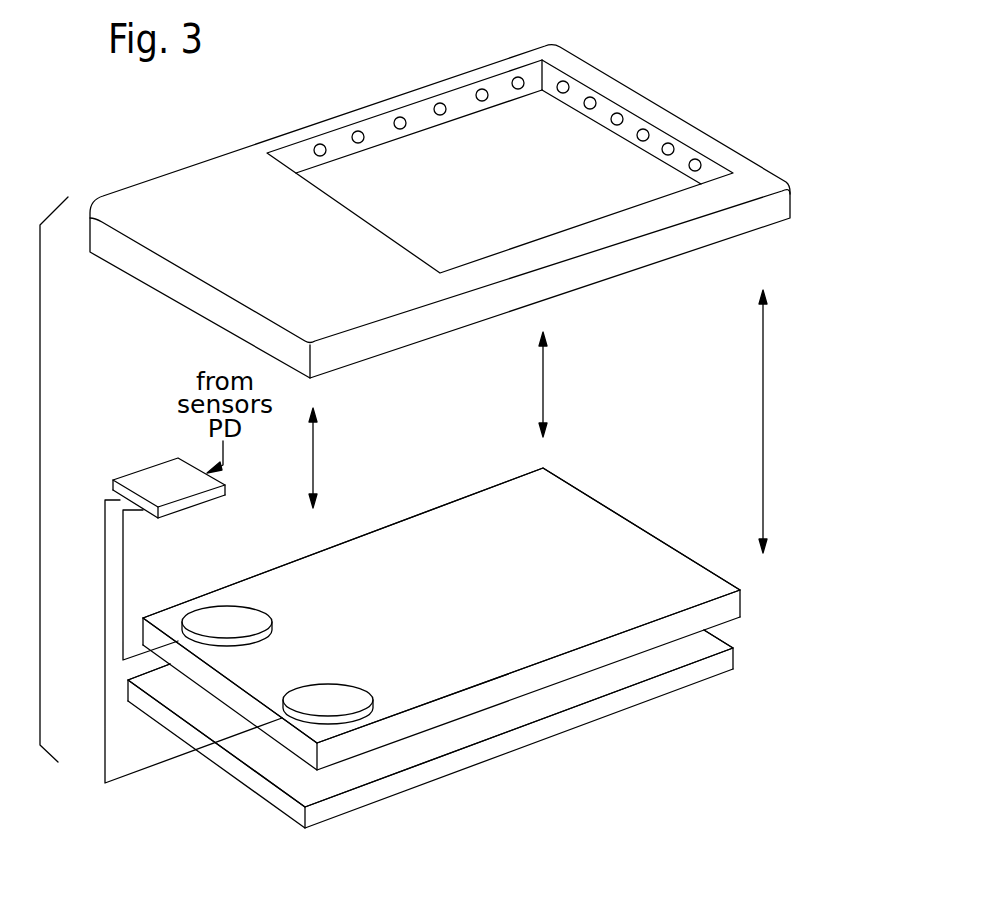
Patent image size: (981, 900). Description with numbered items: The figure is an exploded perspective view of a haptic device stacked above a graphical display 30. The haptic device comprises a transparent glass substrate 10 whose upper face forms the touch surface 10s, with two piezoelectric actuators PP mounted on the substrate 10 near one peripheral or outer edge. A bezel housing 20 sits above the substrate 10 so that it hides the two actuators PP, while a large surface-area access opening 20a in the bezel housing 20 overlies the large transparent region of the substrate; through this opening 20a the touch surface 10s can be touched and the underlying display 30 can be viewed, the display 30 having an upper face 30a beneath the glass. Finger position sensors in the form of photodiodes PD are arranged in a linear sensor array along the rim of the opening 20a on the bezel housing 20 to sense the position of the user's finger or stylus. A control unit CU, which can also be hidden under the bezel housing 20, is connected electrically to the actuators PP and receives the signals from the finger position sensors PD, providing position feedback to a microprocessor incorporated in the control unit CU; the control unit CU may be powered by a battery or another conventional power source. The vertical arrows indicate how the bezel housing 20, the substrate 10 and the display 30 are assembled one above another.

The bezel housing 20 is at (690, 138).
The access opening 20a is at (577, 135).
The photodiodes PD is at (481, 89).
The transparent substrate 10 is at (622, 500).
The touch surface 10s is at (455, 541).
The piezoelectric actuators PP is at (210, 623).
The graphical display 30 is at (567, 748).
The top surface of base plate 30a is at (577, 688).
The control unit CU is at (138, 483).